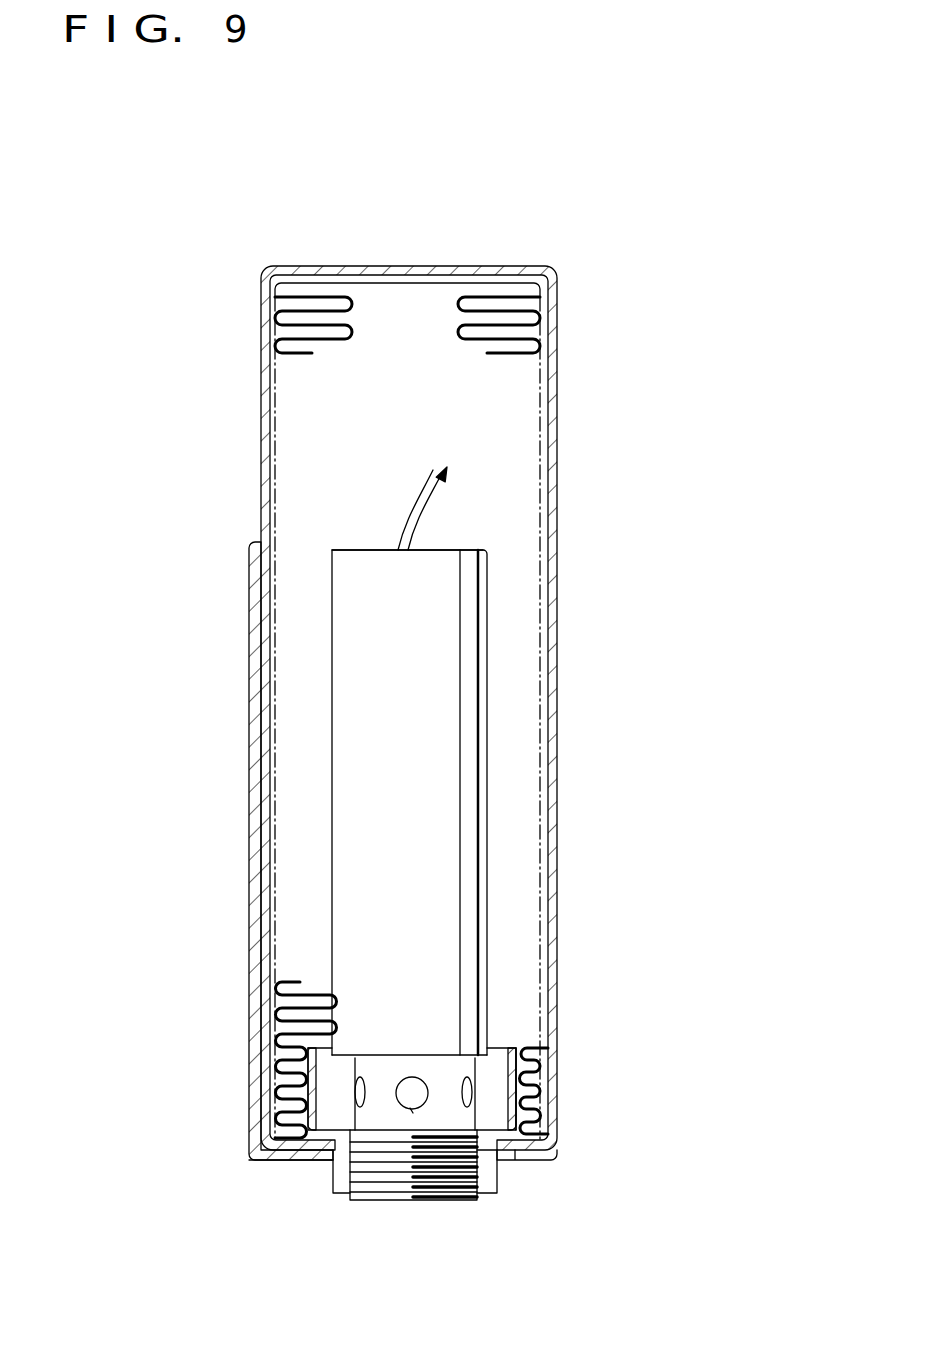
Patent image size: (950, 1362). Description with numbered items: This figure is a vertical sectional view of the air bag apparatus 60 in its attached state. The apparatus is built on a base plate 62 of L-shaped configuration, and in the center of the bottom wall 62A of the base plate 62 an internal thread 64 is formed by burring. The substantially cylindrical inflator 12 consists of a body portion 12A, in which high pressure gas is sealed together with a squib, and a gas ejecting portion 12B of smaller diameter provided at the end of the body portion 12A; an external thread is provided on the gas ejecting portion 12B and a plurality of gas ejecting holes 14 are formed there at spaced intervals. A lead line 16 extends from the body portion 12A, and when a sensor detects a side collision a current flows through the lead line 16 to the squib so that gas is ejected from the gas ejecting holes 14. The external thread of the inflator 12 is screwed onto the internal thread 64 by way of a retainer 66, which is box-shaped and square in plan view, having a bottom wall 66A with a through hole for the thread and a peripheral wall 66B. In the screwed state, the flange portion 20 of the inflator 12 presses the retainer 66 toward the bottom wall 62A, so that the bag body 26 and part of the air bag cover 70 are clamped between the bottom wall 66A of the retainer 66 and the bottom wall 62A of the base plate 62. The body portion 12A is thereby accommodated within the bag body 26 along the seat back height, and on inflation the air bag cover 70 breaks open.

The air bag apparatus 60 is at (692, 258).
The air bag cover 70 is at (555, 410).
The bag body 26 is at (290, 357).
The base plate 62 is at (250, 826).
The bottom wall 62A is at (290, 1158).
The retainer 66 is at (500, 1042).
The bottom wall 66A is at (517, 1148).
The peripheral wall 66B is at (525, 1053).
The flange portion 20 is at (314, 1110).
The gas ejecting holes 14 is at (403, 1112).
The gas ejecting portion 12B is at (373, 1108).
The internal thread 64 is at (336, 1170).
The inflator 12 is at (320, 742).
The body portion 12A is at (352, 575).
The lead line 16 is at (412, 498).